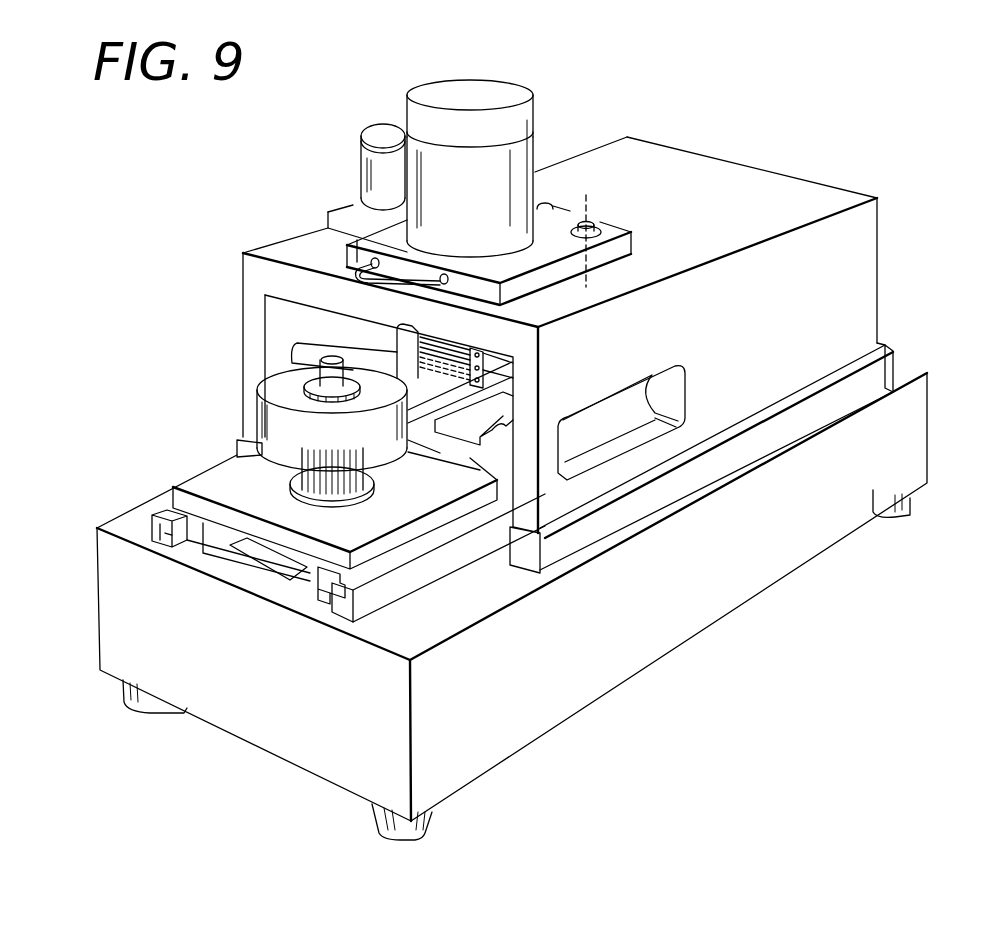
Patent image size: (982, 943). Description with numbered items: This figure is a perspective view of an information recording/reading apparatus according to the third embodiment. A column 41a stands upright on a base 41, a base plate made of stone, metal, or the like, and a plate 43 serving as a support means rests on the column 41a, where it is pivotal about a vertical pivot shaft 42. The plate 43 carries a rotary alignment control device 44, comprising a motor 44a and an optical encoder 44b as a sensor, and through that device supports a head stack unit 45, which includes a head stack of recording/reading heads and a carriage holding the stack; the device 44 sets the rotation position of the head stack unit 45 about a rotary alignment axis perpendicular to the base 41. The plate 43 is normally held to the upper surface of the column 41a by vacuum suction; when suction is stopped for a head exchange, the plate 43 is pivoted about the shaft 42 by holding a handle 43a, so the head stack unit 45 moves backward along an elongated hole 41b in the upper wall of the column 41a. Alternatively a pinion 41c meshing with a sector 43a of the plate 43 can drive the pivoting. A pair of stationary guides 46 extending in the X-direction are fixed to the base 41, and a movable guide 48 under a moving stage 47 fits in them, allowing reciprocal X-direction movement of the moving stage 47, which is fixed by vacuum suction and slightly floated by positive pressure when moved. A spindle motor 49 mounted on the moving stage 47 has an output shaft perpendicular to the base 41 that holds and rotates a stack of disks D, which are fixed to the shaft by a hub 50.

The base 41 is at (753, 540).
The column 41a is at (835, 297).
The elongated hole 41b is at (540, 203).
The pinion 41c is at (390, 130).
The vertical pivot shaft 42 is at (592, 222).
The plate 43 is at (613, 250).
The handle 43a is at (360, 257).
The rotary alignment control device 44 is at (578, 146).
The motor 44a is at (507, 173).
The optical encoder 44b is at (474, 87).
The head stack unit 45 is at (443, 350).
The stationary guides 46 is at (147, 530).
The moving stage 47 is at (190, 483).
The movable guide 48 is at (320, 572).
The spindle motor 49 is at (340, 483).
The hub 50 is at (330, 357).
The disks D is at (280, 385).